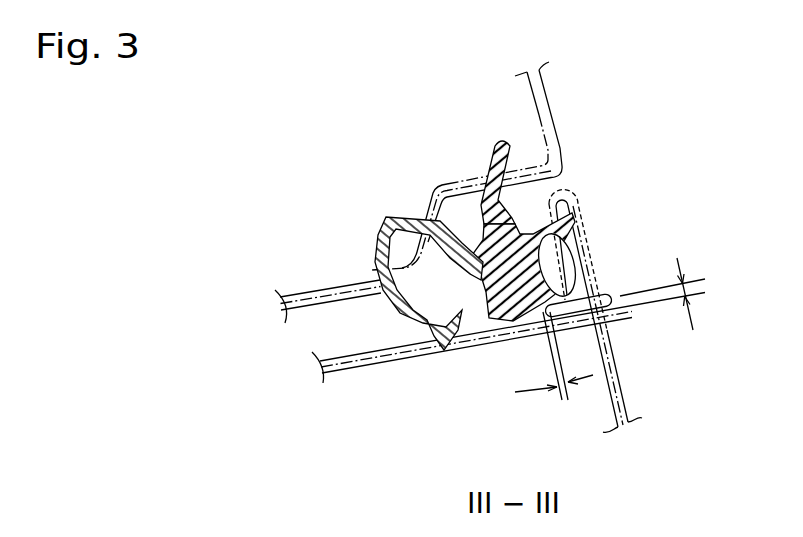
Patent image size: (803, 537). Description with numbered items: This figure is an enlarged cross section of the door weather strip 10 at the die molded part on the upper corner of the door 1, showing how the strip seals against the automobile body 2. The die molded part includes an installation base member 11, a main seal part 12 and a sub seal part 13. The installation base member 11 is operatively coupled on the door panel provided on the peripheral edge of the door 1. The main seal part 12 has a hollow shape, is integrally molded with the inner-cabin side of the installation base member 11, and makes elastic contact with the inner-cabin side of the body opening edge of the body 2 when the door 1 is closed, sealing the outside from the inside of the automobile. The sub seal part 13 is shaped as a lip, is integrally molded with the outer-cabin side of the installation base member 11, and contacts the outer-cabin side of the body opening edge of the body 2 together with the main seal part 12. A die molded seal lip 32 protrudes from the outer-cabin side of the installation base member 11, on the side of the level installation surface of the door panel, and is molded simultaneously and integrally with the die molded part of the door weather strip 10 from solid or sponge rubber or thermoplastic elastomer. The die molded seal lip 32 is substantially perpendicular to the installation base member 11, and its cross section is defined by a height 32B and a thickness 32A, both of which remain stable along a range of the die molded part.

The door 1 is at (347, 374).
The body 2 is at (428, 216).
The door weather strip 10 is at (557, 173).
The installation base member 11 is at (563, 293).
The main seal part 12 is at (375, 250).
The sub seal part 13 is at (492, 150).
The die molded seal lip 32 is at (543, 322).
The thickness 32A is at (533, 394).
The height 32B is at (669, 314).